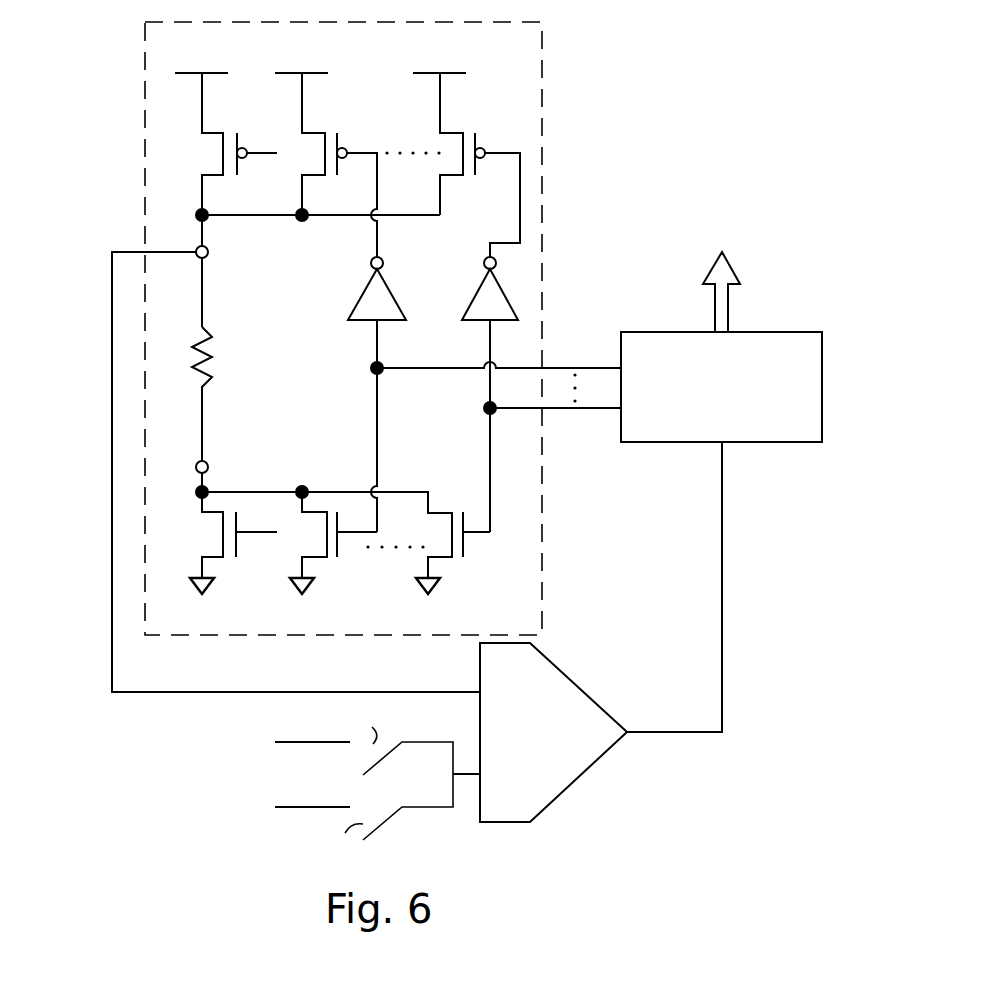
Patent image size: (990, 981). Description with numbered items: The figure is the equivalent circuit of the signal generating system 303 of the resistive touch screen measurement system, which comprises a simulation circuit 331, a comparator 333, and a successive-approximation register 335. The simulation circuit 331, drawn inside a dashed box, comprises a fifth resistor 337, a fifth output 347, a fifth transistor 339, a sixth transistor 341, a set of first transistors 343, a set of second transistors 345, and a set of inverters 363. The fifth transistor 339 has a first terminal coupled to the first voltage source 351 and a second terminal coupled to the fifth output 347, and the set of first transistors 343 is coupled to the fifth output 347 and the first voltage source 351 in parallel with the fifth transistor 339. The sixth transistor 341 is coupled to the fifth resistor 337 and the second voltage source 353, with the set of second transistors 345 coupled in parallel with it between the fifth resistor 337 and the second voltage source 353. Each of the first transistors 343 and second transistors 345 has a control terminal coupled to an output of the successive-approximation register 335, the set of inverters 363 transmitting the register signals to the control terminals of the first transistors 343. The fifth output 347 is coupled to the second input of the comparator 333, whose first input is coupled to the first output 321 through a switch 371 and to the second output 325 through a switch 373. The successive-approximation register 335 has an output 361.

The signal generating system 303 is at (836, 156).
The simulation circuit 331 is at (543, 160).
The first voltage source 351 is at (320, 60).
The fifth transistor 339 is at (222, 144).
The set of first transistors 343 is at (411, 165).
The fifth output 347 is at (207, 254).
The fifth resistor 337 is at (206, 385).
The set of inverters 363 is at (361, 294).
The sixth transistor 341 is at (223, 535).
The set of second transistors 345 is at (386, 535).
The second voltage source 353 is at (208, 585).
The successive-approximation register 335 is at (823, 386).
The output 361 is at (736, 266).
The comparator 333 is at (578, 778).
The switch 371 is at (396, 737).
The switch 373 is at (379, 820).
The first output 321 is at (230, 738).
The second output 325 is at (230, 804).